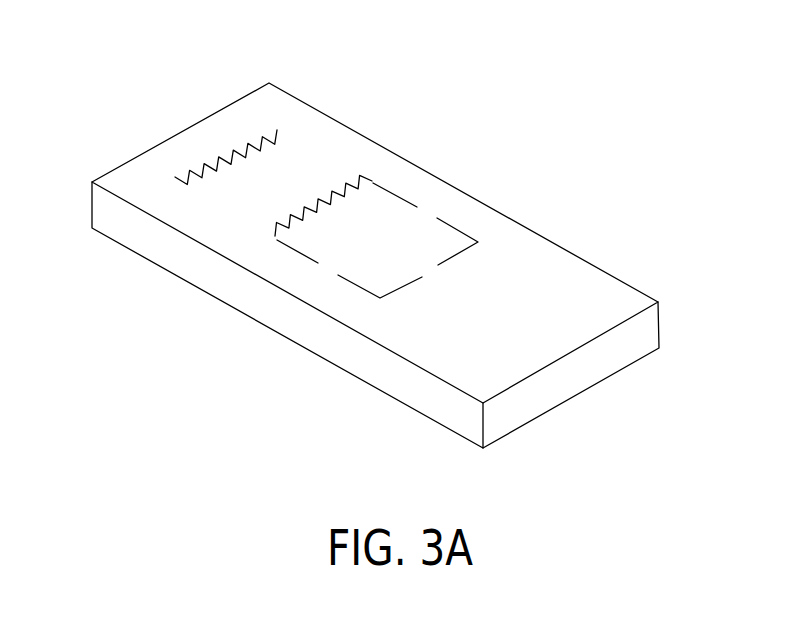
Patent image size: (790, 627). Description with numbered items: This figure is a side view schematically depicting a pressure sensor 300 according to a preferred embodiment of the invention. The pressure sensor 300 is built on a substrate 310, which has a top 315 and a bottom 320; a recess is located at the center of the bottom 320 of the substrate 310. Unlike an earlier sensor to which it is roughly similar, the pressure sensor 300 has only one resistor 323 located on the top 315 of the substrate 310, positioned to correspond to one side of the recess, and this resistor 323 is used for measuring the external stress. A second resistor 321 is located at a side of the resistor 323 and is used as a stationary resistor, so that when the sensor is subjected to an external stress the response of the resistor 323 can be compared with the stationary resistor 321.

The pressure sensor 300 is at (111, 111).
The substrate 310 is at (553, 392).
The top 315 is at (533, 250).
The bottom 320 is at (250, 317).
The resistor 321 is at (277, 129).
The resistor 323 is at (371, 180).